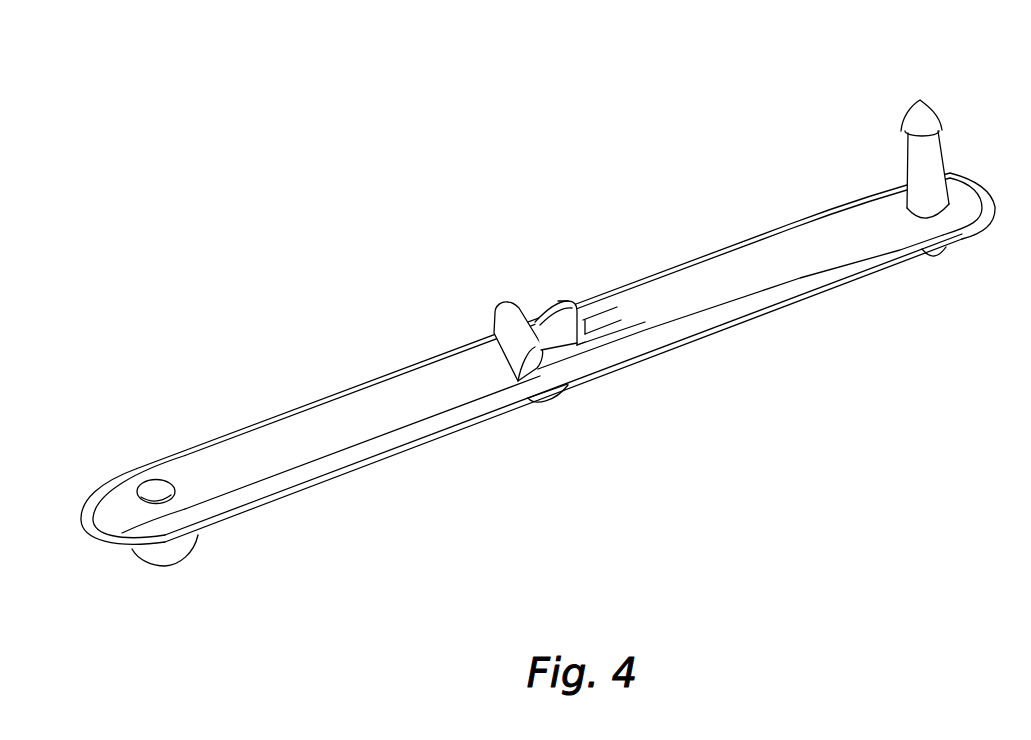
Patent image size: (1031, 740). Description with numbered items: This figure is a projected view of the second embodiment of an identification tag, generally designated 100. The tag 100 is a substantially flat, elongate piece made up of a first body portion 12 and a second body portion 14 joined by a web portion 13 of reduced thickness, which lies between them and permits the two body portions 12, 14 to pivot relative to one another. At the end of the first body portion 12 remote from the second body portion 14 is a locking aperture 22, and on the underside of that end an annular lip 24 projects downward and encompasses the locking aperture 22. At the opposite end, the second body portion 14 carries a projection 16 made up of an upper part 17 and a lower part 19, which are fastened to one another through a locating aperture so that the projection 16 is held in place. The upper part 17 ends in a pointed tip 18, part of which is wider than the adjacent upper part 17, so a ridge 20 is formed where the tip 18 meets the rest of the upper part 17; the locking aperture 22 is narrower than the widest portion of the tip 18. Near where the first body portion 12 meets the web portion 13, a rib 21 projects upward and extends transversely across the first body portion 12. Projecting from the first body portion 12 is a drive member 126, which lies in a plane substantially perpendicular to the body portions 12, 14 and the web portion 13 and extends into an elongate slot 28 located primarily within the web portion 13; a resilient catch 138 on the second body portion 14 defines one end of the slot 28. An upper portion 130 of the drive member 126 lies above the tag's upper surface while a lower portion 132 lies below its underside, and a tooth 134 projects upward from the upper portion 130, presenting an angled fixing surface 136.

The identification tag 100 is at (584, 166).
The first elongate body portion 12 is at (291, 442).
The web portion 13 is at (570, 358).
The second elongate body portion 14 is at (793, 250).
The projection 16 is at (952, 162).
The upper part 17 is at (917, 163).
The pointed tip 18 is at (918, 108).
The lower part 19 is at (938, 254).
The ridge 20 is at (945, 127).
The rib 21 is at (502, 332).
The locking aperture 22 is at (148, 490).
The annular lip 24 is at (173, 552).
The elongate slot 28 is at (588, 350).
The drive member 126 is at (607, 283).
The upper portion 130 is at (530, 300).
The lower portion 132 is at (546, 398).
The tooth 134 is at (567, 301).
The fixing surface 136 is at (550, 298).
The resilient catch 138 is at (608, 318).